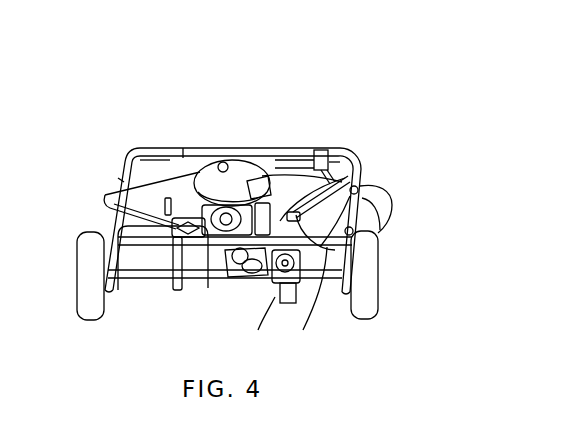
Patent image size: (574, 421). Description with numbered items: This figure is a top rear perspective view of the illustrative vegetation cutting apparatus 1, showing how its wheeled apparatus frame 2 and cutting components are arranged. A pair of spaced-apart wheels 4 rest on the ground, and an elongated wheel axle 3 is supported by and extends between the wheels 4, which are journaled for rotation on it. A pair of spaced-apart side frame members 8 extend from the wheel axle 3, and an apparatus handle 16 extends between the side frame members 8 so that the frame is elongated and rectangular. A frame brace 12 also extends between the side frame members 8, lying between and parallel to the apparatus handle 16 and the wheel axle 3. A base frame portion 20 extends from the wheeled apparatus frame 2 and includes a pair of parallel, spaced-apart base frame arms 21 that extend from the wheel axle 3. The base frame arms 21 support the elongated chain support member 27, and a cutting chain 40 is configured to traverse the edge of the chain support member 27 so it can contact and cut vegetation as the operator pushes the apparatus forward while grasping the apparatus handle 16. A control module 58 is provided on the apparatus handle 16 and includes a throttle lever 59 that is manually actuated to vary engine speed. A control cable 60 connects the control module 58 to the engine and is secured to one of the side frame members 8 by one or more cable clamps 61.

The vegetation cutting apparatus 1 is at (122, 69).
The wheeled apparatus frame 2 is at (226, 150).
The wheel axle 3 is at (146, 292).
The wheels 4 is at (85, 252).
The side frame members 8 is at (120, 180).
The frame brace 12 is at (325, 276).
The apparatus handle 16 is at (184, 148).
The base frame portion 20 is at (176, 314).
The base frame arms 21 is at (280, 292).
The chain support member 27 is at (142, 150).
The cutting chain 40 is at (107, 216).
The control module 58 is at (318, 149).
The throttle lever 59 is at (297, 152).
The control cable 60 is at (345, 158).
The cable clamps 61 is at (372, 202).